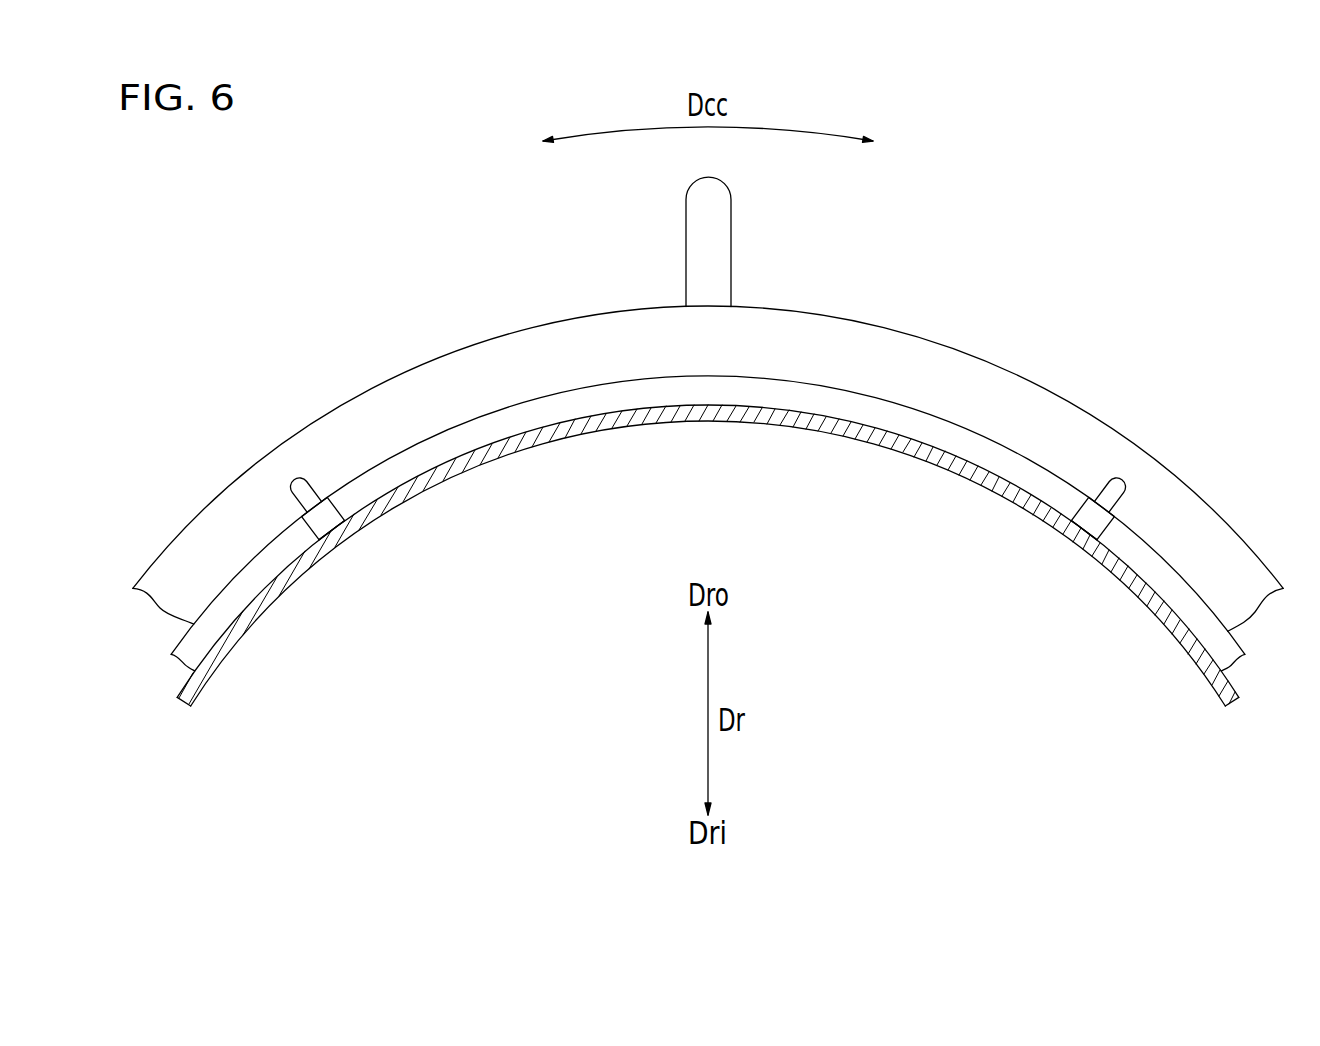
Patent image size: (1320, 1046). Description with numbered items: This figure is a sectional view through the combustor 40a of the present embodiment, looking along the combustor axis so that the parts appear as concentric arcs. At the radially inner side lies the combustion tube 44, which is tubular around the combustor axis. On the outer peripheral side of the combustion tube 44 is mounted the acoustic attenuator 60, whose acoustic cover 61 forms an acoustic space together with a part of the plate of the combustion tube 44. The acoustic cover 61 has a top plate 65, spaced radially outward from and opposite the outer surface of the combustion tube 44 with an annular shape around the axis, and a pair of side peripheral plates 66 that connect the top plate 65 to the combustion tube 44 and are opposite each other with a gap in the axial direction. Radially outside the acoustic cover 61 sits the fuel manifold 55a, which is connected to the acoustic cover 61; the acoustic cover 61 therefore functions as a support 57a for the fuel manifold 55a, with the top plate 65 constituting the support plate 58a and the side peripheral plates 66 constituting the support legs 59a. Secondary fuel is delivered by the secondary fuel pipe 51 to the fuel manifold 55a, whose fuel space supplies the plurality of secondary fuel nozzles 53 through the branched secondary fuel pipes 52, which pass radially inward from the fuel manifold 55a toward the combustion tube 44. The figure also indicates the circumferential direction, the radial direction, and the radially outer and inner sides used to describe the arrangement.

The combustor 40a is at (1068, 226).
The combustion tube 44 is at (660, 424).
The secondary fuel pipe 51 is at (724, 213).
The branched secondary fuel pipe 52 is at (299, 477).
The secondary fuel nozzle 53 is at (339, 541).
The fuel manifold 55a is at (526, 342).
The support 57a is at (985, 447).
The support plate 58a is at (798, 382).
The support leg 59a is at (907, 426).
The acoustic attenuator 60 is at (504, 450).
The acoustic cover 61 is at (708, 479).
The top plate 65 is at (708, 442).
The side peripheral plate 66 is at (708, 551).